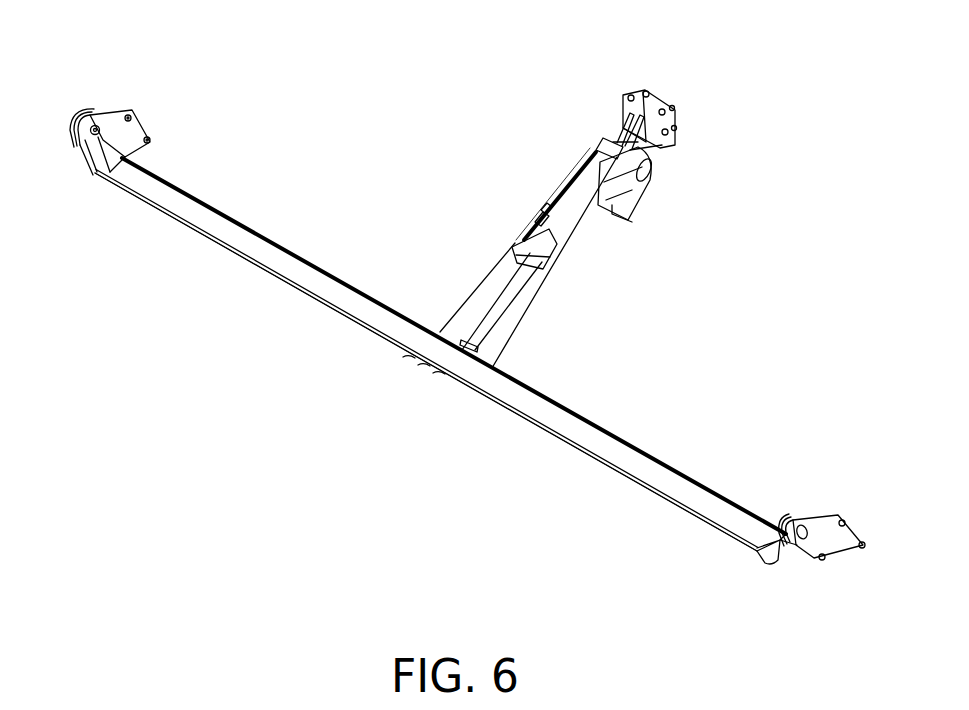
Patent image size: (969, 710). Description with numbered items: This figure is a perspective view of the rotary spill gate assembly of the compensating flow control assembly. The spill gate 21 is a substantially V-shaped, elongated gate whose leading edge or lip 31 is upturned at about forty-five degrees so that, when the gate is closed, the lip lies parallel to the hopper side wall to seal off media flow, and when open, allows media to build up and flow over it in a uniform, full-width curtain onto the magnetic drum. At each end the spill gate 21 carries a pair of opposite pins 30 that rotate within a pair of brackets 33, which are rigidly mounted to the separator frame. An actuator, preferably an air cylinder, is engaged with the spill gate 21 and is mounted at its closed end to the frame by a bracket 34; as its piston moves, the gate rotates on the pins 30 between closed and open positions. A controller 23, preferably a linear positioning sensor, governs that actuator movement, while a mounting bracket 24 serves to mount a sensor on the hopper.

The spill gate 21 is at (592, 441).
The controller 23 is at (560, 187).
The mounting bracket 24 is at (562, 229).
The pins 30 is at (102, 113).
The lip 31 is at (317, 300).
The brackets 33 is at (133, 132).
The bracket 34 is at (627, 113).